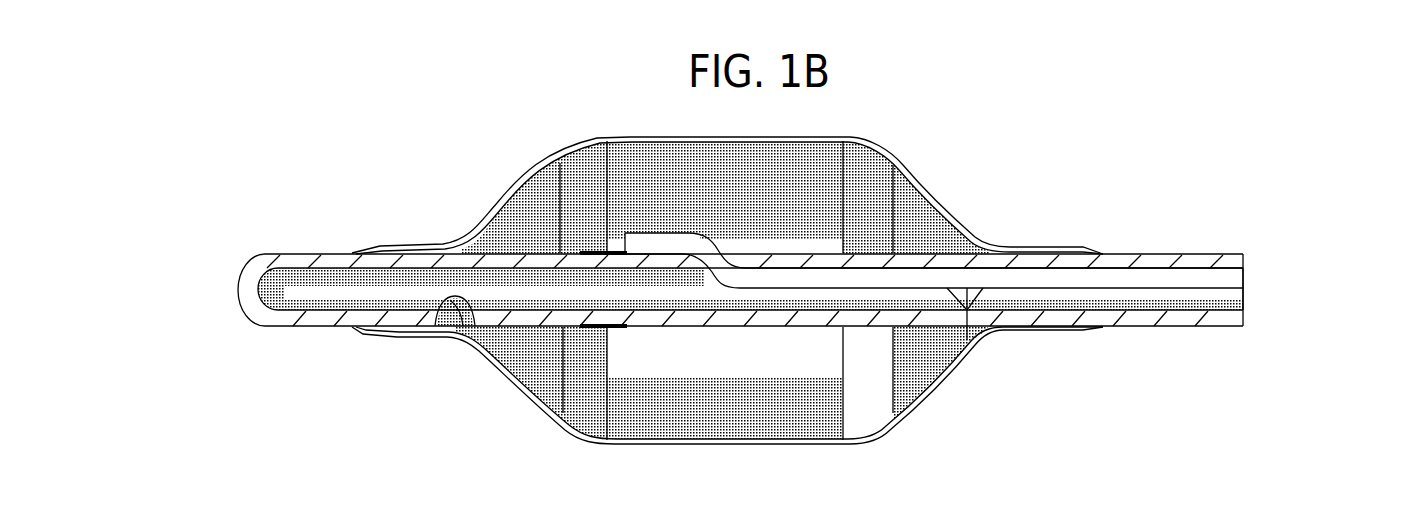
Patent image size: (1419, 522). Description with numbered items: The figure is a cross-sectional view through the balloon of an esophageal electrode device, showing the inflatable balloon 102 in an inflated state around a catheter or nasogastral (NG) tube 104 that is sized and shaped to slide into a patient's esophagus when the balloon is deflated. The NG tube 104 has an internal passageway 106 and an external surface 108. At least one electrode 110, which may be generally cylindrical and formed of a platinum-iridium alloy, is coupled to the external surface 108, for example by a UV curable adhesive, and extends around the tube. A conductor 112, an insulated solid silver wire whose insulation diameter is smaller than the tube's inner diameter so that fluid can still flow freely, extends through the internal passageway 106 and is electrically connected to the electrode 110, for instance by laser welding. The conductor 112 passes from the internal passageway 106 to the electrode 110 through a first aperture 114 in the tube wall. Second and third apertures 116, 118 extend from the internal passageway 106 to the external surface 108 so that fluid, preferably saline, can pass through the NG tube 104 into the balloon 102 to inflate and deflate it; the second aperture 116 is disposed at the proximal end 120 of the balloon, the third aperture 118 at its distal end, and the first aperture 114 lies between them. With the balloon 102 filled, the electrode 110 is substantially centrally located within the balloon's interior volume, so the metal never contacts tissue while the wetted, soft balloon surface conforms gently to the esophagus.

The inflatable balloon 102 is at (492, 135).
The nasogastral (NG) tube 104 is at (1225, 253).
The internal passageway 106 is at (1147, 300).
The external surface 108 is at (1163, 252).
The electrode 110 is at (600, 251).
The conductor 112 is at (1203, 280).
The first aperture 114 is at (720, 240).
The second aperture 116 is at (453, 332).
The third aperture 118 is at (967, 312).
The proximal end 120 is at (1033, 235).